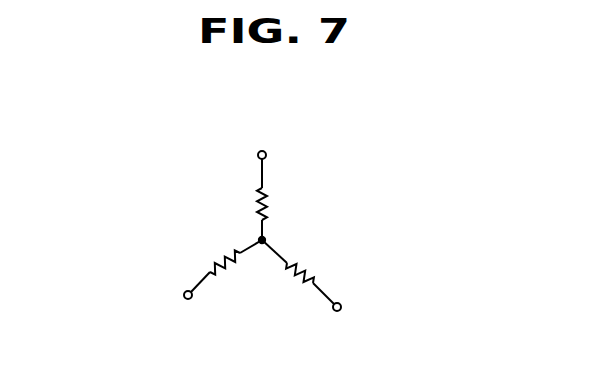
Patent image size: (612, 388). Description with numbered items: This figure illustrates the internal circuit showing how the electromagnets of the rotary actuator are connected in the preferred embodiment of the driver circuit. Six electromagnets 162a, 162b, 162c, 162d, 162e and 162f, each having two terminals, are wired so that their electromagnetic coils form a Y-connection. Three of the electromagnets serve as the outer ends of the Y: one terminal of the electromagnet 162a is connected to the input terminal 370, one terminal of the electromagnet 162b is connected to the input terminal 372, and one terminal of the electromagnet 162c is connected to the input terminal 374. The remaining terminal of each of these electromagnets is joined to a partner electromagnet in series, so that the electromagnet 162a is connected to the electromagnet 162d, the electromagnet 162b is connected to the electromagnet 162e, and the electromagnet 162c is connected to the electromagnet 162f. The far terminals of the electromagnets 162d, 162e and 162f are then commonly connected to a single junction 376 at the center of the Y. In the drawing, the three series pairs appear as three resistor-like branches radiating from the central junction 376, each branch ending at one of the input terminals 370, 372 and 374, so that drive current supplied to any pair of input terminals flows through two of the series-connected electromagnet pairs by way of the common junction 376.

The input terminal 370 is at (266, 152).
The input terminal 372 is at (341, 306).
The input terminal 374 is at (187, 299).
The junction 376 is at (262, 244).
The electromagnet 162a is at (341, 202).
The electromagnet 162b is at (366, 260).
The electromagnet 162c is at (171, 248).
The electromagnet 162d is at (273, 205).
The electromagnet 162e is at (312, 270).
The electromagnet 162f is at (217, 258).